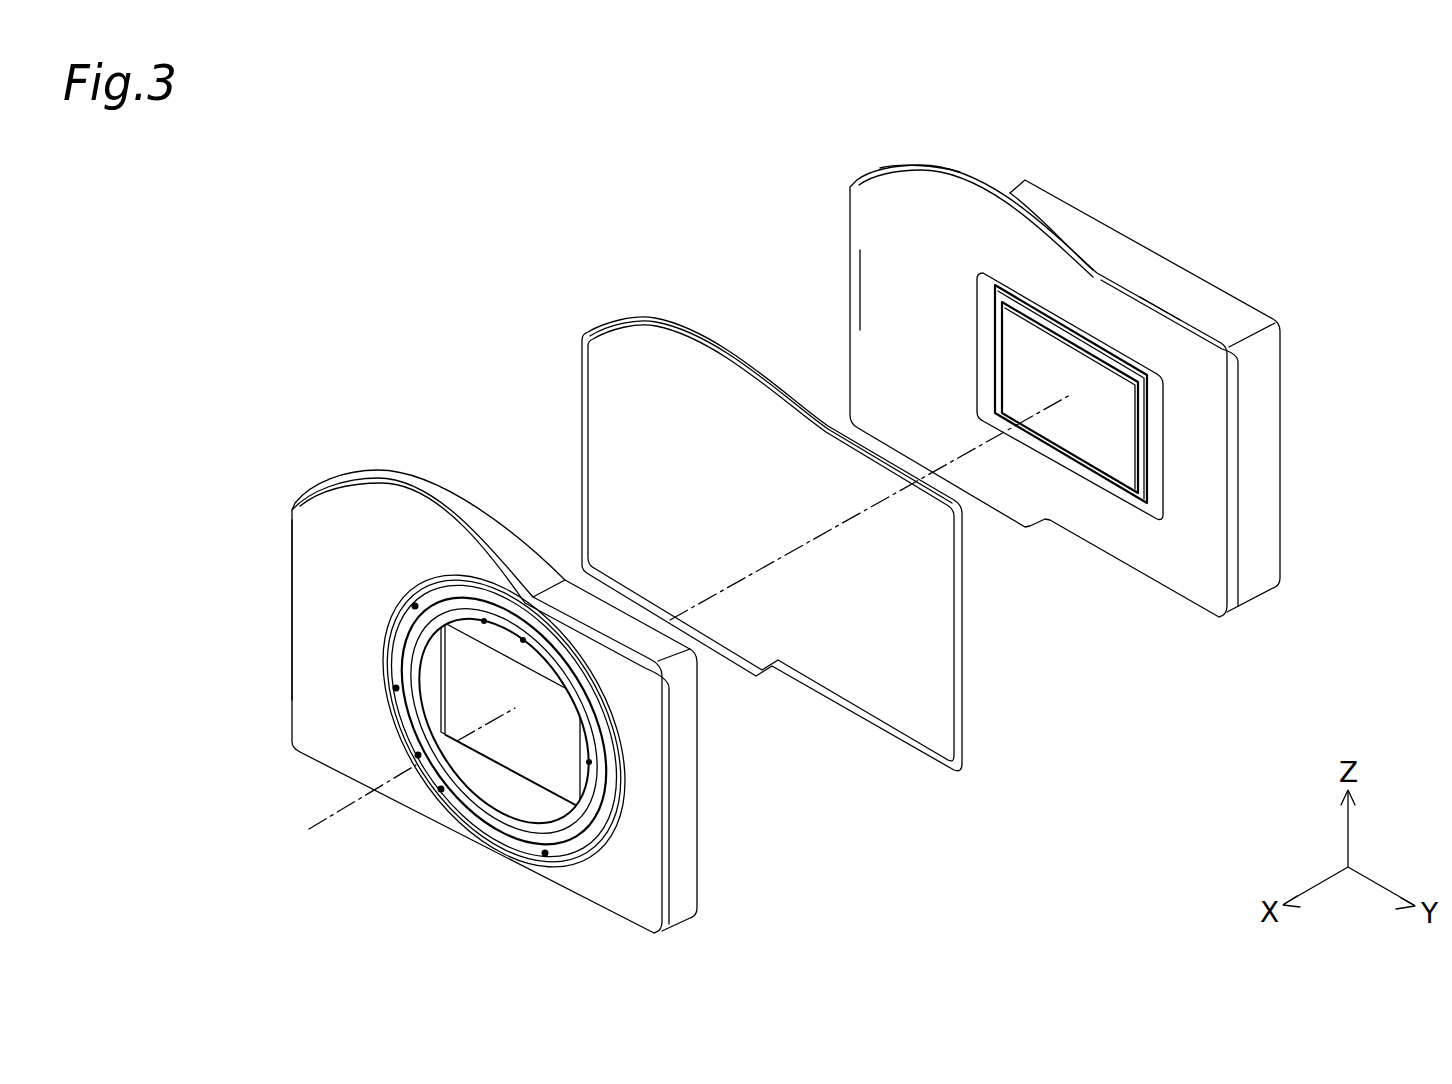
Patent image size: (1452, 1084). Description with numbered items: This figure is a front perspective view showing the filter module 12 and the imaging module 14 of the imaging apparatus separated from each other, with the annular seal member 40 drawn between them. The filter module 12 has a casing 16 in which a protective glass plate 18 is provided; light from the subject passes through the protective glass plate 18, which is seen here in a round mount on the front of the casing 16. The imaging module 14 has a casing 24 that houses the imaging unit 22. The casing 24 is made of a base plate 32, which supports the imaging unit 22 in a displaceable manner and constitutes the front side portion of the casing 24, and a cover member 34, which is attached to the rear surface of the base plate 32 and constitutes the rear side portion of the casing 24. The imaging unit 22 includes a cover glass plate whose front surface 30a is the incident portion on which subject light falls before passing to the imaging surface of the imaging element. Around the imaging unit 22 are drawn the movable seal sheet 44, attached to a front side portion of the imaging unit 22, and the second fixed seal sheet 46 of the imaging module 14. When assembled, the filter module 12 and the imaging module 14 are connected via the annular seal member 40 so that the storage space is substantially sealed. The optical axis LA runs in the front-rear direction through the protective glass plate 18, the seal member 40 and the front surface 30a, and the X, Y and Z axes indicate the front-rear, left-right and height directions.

The filter module 12 is at (300, 475).
The imaging module 14 is at (1012, 360).
The casing 16 is at (308, 587).
The protective glass plate 18 is at (556, 722).
The imaging unit 22 is at (995, 372).
The casing 24 is at (1059, 174).
The front surface 30a is at (1080, 424).
The base plate 32 is at (969, 174).
The cover member 34 is at (1163, 273).
The annular seal member 40 is at (966, 712).
The movable seal sheet 44 is at (980, 296).
The second fixed seal sheet 46 is at (868, 237).
The optical axis LA is at (321, 826).